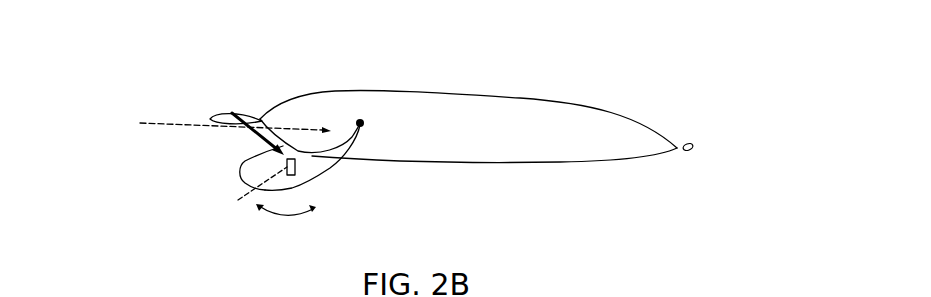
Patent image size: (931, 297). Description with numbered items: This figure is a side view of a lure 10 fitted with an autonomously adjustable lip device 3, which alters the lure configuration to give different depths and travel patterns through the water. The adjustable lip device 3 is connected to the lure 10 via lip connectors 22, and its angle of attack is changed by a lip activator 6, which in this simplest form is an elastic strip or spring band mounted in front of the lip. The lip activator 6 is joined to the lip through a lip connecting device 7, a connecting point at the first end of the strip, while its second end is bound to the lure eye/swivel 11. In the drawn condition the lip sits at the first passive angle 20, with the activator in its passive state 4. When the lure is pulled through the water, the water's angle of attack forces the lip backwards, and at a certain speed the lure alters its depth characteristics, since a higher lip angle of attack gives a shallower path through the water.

The lure 10 is at (267, 50).
The lure eye/swivel 11 is at (212, 117).
The first passive angle 20 is at (316, 140).
The lip connectors 22 is at (360, 119).
The lip activator 6 is at (259, 132).
The lip connecting device 7 is at (283, 142).
The adjustable lip device 3 is at (242, 169).
The passive state 4 is at (275, 213).